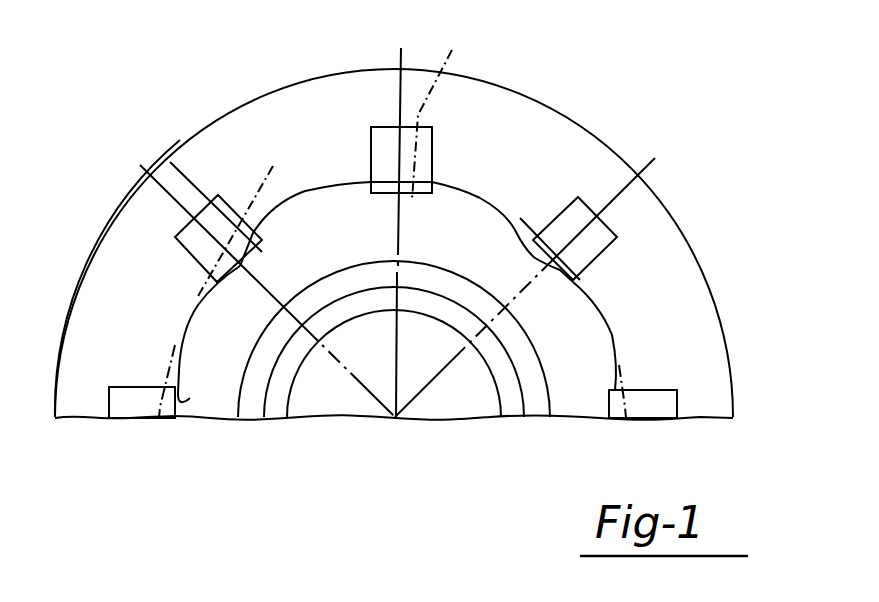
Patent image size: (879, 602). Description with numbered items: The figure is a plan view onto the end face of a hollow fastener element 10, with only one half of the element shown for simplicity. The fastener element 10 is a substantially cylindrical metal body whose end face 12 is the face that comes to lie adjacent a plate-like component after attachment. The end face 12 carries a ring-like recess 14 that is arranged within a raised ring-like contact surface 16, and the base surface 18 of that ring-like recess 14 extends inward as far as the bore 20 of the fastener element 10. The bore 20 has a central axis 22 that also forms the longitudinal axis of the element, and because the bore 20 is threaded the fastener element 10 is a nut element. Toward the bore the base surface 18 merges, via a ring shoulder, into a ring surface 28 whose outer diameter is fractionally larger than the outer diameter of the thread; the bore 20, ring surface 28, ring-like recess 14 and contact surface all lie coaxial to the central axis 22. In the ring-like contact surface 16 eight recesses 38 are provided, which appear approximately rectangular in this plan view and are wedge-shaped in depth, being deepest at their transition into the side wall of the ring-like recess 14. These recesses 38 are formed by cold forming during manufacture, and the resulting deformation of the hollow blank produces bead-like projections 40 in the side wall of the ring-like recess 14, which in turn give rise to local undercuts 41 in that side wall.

The hollow fastener element 10 is at (706, 278).
The end face 12 is at (135, 233).
The ring-like recess 14 is at (200, 396).
The ring-like contact surface 16 is at (500, 133).
The base surface 18 is at (572, 390).
The bore 20 is at (298, 377).
The central axis 22 is at (398, 420).
The ring surface 28 is at (394, 318).
The recesses 38 is at (384, 140).
The bead-like projections 40 is at (242, 268).
The local undercuts 41 is at (335, 162).